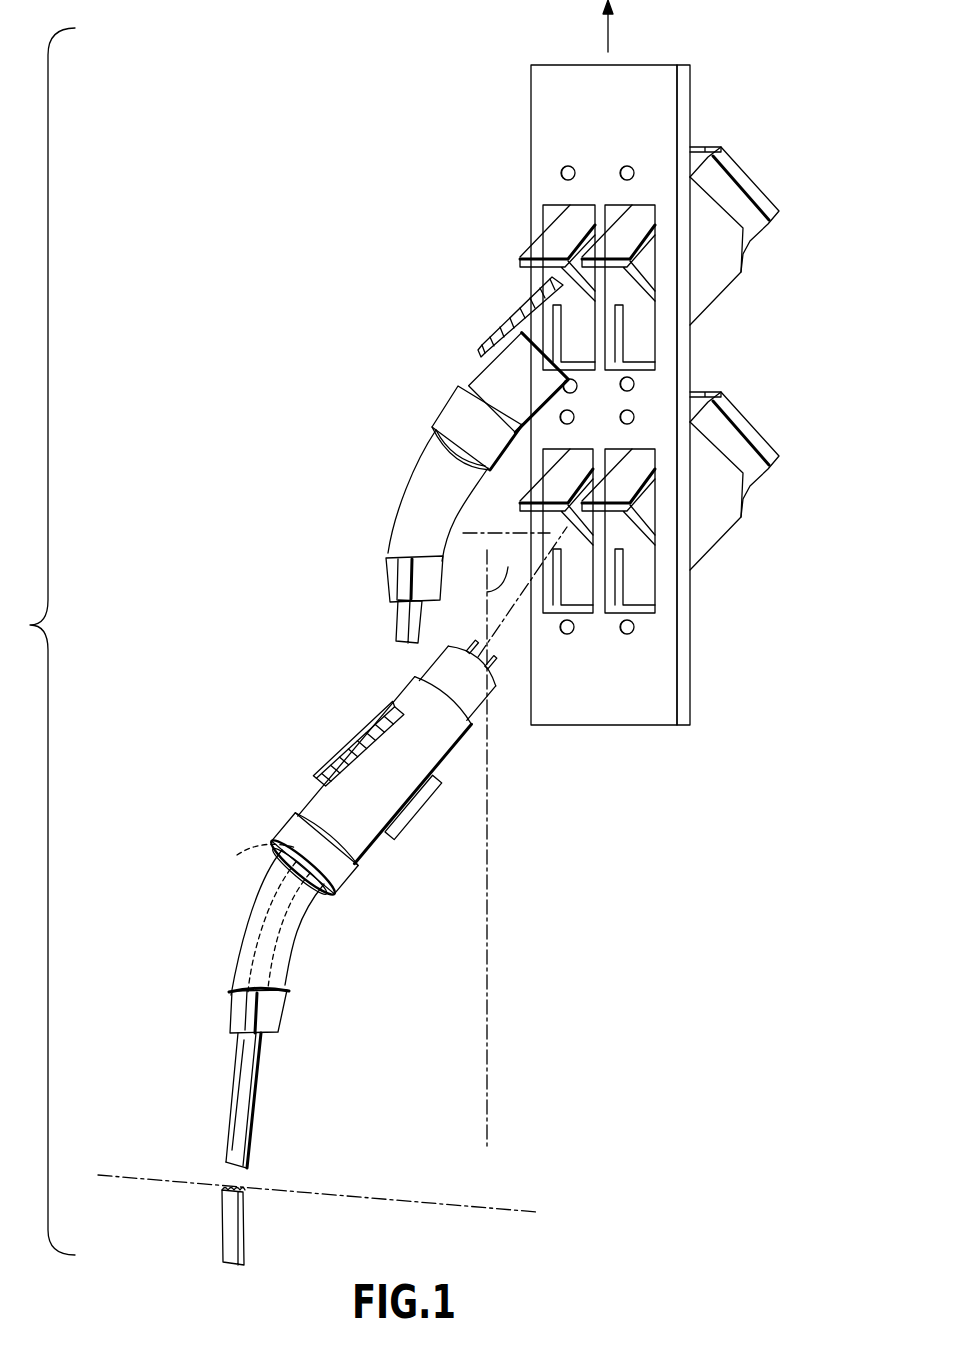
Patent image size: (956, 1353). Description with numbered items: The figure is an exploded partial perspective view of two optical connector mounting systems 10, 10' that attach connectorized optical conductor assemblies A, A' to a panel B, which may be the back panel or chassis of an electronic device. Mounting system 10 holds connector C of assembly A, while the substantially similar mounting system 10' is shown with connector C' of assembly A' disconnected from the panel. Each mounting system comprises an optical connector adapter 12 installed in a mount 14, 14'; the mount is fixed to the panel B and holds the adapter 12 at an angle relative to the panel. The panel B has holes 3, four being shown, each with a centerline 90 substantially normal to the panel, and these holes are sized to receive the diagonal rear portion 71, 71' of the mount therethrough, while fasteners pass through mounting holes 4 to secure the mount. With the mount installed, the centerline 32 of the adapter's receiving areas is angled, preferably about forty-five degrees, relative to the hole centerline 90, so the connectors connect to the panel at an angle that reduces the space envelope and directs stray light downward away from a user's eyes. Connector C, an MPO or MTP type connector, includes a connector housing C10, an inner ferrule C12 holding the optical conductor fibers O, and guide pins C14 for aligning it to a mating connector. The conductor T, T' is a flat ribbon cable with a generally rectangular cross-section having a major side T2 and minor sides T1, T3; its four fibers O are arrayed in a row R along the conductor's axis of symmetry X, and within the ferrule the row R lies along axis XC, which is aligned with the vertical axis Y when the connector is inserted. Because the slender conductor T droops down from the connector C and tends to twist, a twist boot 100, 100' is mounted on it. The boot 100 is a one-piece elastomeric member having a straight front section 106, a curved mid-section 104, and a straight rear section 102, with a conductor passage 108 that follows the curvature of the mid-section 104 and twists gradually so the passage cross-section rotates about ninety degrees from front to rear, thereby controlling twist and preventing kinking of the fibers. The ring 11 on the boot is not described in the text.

The vertical axis Y is at (610, 38).
The panel B is at (540, 128).
The optical connector adapter 12 is at (720, 180).
The hole 3 is at (550, 206).
The mounting hole 4 is at (567, 172).
The mount 14' is at (587, 249).
The rear portion of the adapter 71' is at (567, 232).
The mount 14 is at (587, 508).
The rear portion of the adapter 71 is at (576, 481).
The centerline of hole 90 is at (500, 533).
The axis XC is at (503, 566).
The centerline of the receiving areas 32 is at (510, 617).
The axis of symmetry X is at (407, 1200).
The optical connector mounting system 10' is at (478, 298).
The connector C' is at (491, 401).
The twist boot 100' is at (409, 495).
The connectorized optical conductor assembly A' is at (395, 587).
The conductor T' is at (428, 621).
The optical connector mounting system 10 is at (510, 717).
The connector C is at (387, 768).
The ferrule C12 is at (433, 665).
The connector housing C10 is at (328, 808).
The guide pins C14 is at (297, 850).
The boot ring 11 is at (325, 897).
The twist boot 100 is at (335, 934).
The minor side T3 is at (260, 917).
The front section 106 is at (247, 863).
The mid-section 104 is at (237, 963).
The conductor passage 108 is at (283, 992).
The rear section 102 is at (230, 1030).
The conductor T is at (266, 1099).
The connectorized optical conductor assembly A is at (216, 1095).
The minor side T1 is at (253, 1117).
The major side T2 is at (225, 1148).
The row R is at (240, 1190).
The optical conductor fibers O is at (230, 1193).